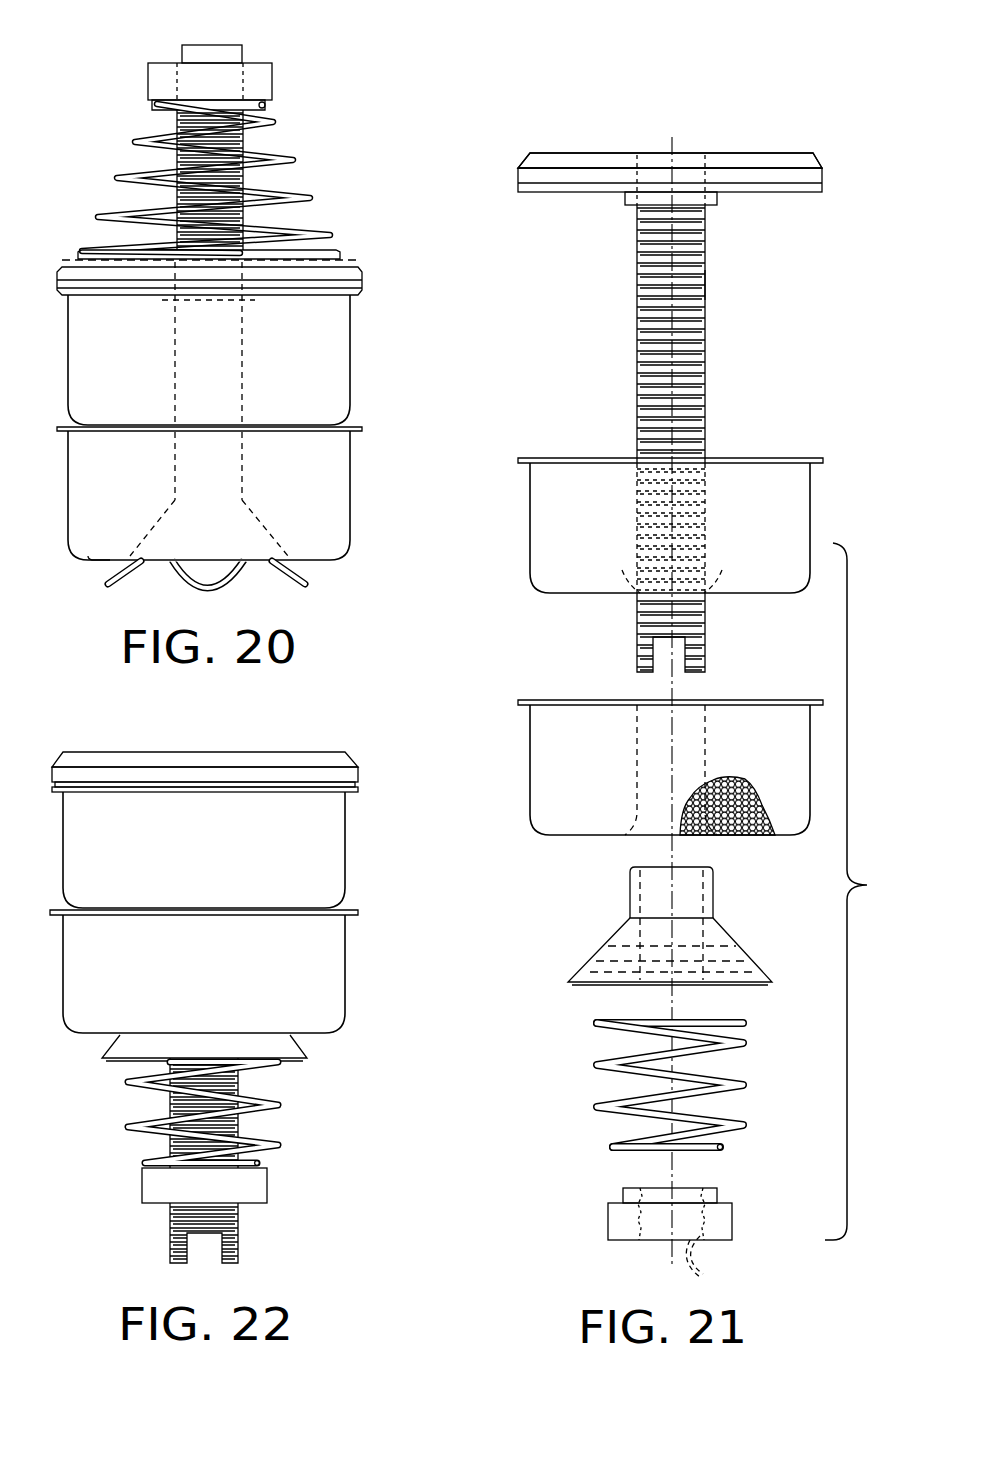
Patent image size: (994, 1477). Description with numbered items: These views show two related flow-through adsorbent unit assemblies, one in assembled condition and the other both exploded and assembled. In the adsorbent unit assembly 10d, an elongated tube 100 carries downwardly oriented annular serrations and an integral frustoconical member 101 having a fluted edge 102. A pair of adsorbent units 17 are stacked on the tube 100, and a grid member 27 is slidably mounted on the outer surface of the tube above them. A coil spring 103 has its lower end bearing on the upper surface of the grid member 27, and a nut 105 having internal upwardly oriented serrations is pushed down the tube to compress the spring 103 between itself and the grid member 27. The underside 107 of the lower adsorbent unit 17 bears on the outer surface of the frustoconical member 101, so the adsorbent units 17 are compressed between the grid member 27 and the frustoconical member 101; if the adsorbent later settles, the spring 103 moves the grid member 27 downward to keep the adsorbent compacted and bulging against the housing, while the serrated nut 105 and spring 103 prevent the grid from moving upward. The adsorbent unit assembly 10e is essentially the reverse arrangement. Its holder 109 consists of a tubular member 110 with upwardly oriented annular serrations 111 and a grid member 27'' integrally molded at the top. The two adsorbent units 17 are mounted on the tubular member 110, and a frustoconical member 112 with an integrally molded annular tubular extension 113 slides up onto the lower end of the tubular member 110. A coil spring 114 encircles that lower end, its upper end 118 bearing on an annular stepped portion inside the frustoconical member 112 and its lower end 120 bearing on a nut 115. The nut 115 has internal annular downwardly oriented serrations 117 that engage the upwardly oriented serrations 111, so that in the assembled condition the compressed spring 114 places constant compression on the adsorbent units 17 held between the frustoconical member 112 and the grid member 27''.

In FIG. 20, the adsorbent unit assembly 10d is at (345, 84).
In FIG. 21, the adsorbent unit assembly 10e is at (765, 115).
In FIG. 22, the adsorbent unit assembly 10e is at (348, 727).
In FIG. 20, the adsorbent unit 17 is at (350, 376).
In FIG. 21, the adsorbent unit 17 is at (530, 533).
In FIG. 22, the adsorbent unit 17 is at (345, 861).
In FIG. 20, the grid member 27 is at (244, 257).
In FIG. 21, the grid member 27'' is at (670, 149).
In FIG. 22, the grid member 27'' is at (205, 743).
In FIG. 20, the elongated tube 100 is at (247, 152).
In FIG. 20, the frustoconical member 101 is at (309, 580).
In FIG. 20, the fluted edge 102 is at (276, 580).
In FIG. 20, the coil spring 103 is at (300, 200).
In FIG. 20, the nut 105 is at (273, 64).
In FIG. 20, the underside of adsorbent unit 107 is at (88, 562).
In FIG. 21, the holder 109 is at (540, 153).
In FIG. 21, the tubular member 110 is at (706, 363).
In FIG. 22, the tubular member 110 is at (168, 1106).
In FIG. 21, the upwardly oriented annular serrations 111 is at (707, 287).
In FIG. 21, the frustoconical member 112 is at (730, 937).
In FIG. 22, the frustoconical member 112 is at (307, 1053).
In FIG. 21, the annular tubular extension 113 is at (713, 894).
In FIG. 21, the coil spring 114 is at (746, 1044).
In FIG. 22, the coil spring 114 is at (279, 1104).
In FIG. 21, the nut 115 is at (732, 1222).
In FIG. 22, the nut 115 is at (267, 1183).
In FIG. 21, the internal annular downwardly oriented serrations 117 is at (698, 1262).
In FIG. 21, the upper end of spring 118 is at (735, 1020).
In FIG. 21, the lower end of spring 120 is at (724, 1147).